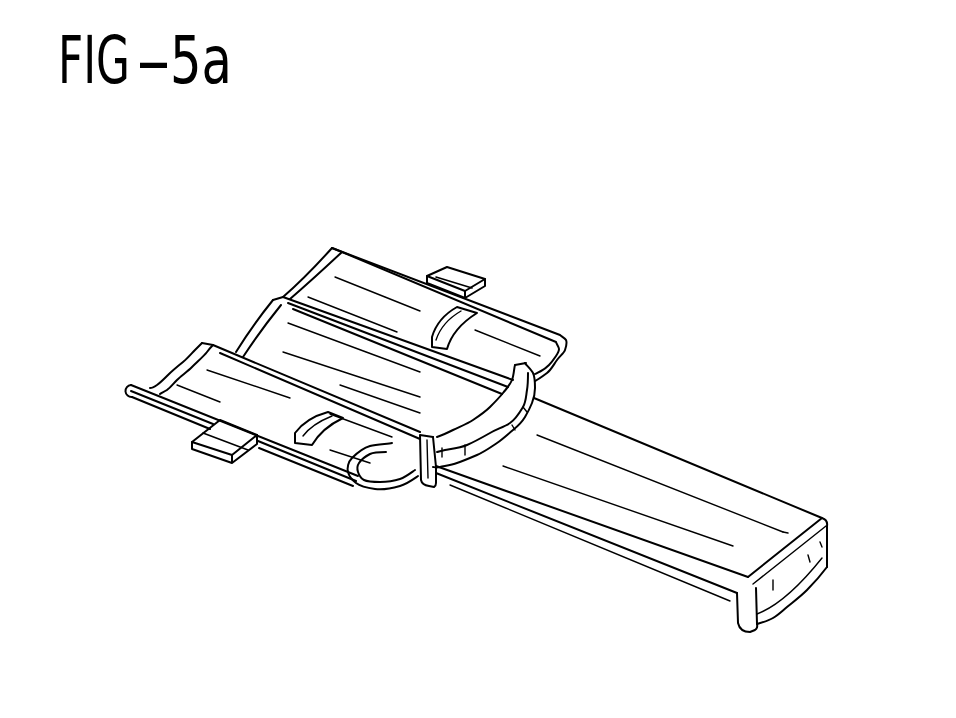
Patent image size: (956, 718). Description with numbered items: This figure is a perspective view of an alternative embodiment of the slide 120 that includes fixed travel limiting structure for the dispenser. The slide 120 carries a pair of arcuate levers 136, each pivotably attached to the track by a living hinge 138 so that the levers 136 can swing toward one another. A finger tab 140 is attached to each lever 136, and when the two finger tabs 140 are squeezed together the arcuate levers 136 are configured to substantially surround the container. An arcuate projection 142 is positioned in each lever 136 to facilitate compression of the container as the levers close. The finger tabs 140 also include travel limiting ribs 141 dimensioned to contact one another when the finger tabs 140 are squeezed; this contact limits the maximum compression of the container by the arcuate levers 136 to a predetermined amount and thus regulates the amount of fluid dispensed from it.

The slide 120 is at (722, 243).
The arcuate lever 136 is at (355, 291).
The living hinge 138 is at (275, 298).
The finger tab 140 is at (443, 267).
The travel limiting rib 141 is at (434, 270).
The arcuate projection 142 is at (465, 308).